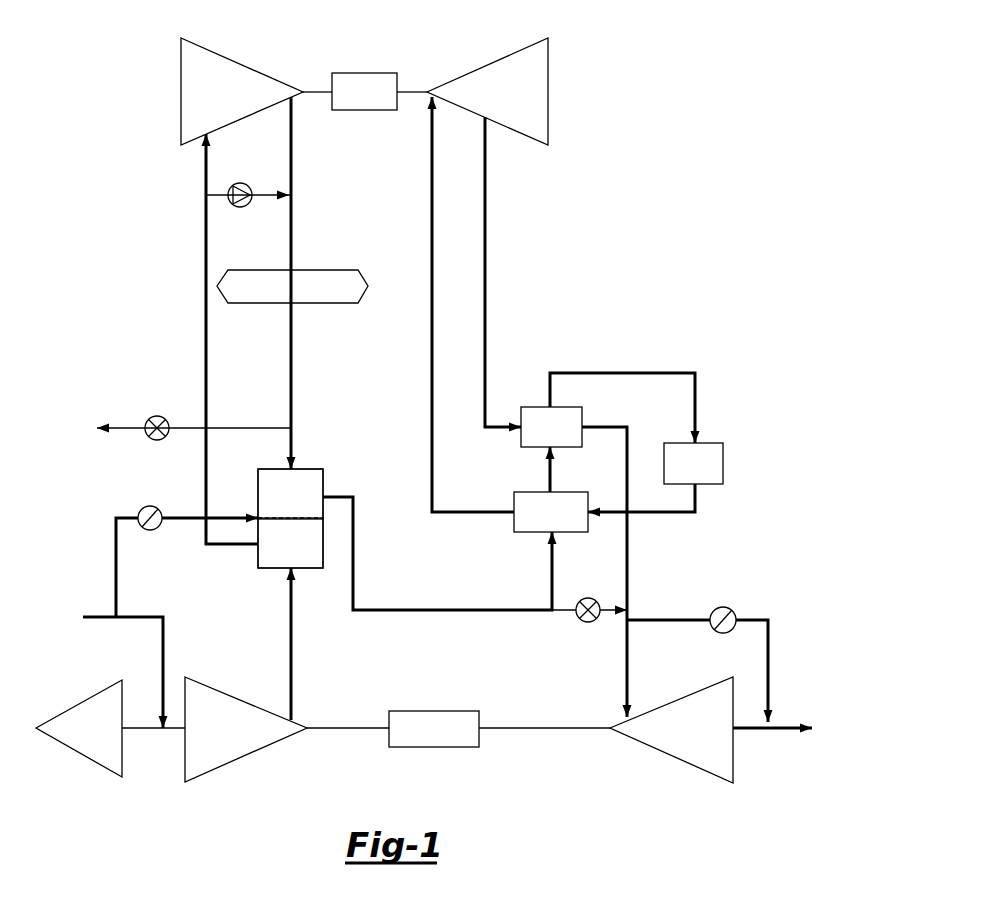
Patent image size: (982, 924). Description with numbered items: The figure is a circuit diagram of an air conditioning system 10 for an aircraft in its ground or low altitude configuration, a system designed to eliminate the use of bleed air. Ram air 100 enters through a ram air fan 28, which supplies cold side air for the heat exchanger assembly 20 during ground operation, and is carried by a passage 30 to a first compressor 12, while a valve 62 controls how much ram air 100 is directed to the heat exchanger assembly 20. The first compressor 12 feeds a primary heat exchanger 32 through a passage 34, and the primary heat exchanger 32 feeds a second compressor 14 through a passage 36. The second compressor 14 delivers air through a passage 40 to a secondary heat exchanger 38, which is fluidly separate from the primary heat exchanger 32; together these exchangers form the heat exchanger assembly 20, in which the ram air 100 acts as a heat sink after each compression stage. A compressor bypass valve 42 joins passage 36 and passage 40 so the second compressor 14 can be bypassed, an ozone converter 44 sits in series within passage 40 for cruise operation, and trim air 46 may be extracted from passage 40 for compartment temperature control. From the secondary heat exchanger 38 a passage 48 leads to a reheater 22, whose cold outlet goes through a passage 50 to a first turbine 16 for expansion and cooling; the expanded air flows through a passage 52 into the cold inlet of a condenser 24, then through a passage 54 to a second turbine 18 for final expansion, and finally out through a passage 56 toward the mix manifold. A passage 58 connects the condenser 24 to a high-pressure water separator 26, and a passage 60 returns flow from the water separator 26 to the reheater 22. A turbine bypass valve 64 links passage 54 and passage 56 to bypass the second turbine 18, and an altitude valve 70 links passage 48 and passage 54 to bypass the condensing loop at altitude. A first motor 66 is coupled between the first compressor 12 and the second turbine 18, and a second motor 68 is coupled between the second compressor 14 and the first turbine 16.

The air conditioning system 10 is at (650, 142).
The first compressor 12 is at (228, 765).
The second compressor 14 is at (235, 58).
The first turbine 16 is at (487, 62).
The second turbine 18 is at (670, 760).
The heat exchanger assembly 20 is at (258, 472).
The reheater 22 is at (520, 532).
The condenser 24 is at (530, 447).
The high-pressure water separator 26 is at (723, 460).
The ram air fan 28 is at (100, 770).
The passage 30 is at (138, 733).
The primary heat exchanger 32 is at (266, 568).
The passage 34 is at (291, 660).
The passage 36 is at (206, 272).
The secondary heat exchanger 38 is at (323, 478).
The passage 40 is at (291, 335).
The compressor bypass valve 42 is at (246, 183).
The ozone converter 44 is at (306, 270).
The trim air 46 is at (128, 432).
The passage 48 is at (440, 610).
The passage 50 is at (432, 390).
The passage 52 is at (485, 168).
The passage 54 is at (627, 550).
The passage 56 is at (752, 733).
The passage 58 is at (625, 373).
The passage 60 is at (695, 500).
The ram air modulator valve/actuator 62 is at (145, 506).
The turbine bypass valve 64 is at (733, 609).
The first motor 66 is at (419, 747).
The second motor 68 is at (356, 73).
The altitude valve 70 is at (585, 623).
The ram air 100 is at (83, 617).